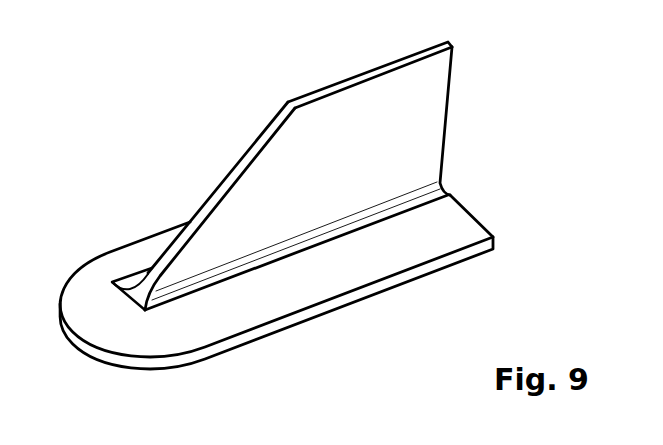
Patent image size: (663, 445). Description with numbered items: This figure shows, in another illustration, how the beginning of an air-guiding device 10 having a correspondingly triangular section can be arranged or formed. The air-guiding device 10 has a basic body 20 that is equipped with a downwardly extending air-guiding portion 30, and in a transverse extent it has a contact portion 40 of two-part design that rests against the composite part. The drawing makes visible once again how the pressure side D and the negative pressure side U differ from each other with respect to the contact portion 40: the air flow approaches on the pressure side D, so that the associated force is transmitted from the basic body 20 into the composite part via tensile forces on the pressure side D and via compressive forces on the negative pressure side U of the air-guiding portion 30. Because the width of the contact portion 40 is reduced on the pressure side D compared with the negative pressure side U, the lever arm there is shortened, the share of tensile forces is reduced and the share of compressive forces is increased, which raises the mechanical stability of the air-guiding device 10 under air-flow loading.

The air-guiding device 10 is at (472, 160).
The basic body 20 is at (311, 161).
The air-guiding portion 30 is at (318, 92).
The contact portion 40 is at (100, 344).
The pressure side D is at (193, 167).
The negative pressure side U is at (306, 200).